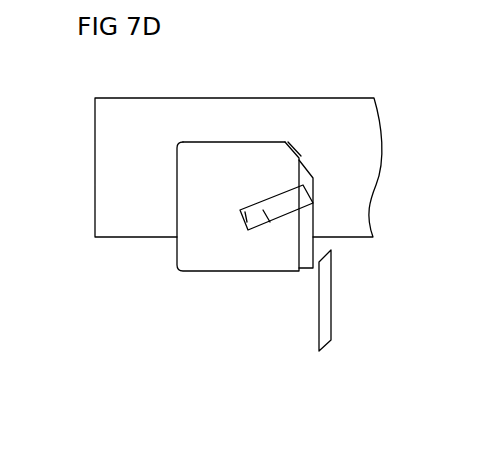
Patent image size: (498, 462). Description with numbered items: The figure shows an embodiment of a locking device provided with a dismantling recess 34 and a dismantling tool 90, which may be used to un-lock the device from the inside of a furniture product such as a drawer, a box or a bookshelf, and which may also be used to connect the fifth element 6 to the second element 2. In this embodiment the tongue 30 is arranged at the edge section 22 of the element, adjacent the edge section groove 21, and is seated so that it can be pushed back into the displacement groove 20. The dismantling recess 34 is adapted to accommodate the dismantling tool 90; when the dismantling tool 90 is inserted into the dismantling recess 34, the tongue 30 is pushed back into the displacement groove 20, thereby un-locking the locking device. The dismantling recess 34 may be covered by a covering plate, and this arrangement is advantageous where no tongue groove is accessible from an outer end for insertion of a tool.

The second element 2 is at (267, 227).
The fifth element 6 is at (130, 148).
The displacement groove 20 is at (247, 228).
The edge section groove 21 is at (175, 182).
The edge section 22 is at (222, 158).
The tongue 30 is at (272, 223).
The dismantling recess 34 is at (307, 226).
The dismantling tool 90 is at (328, 282).